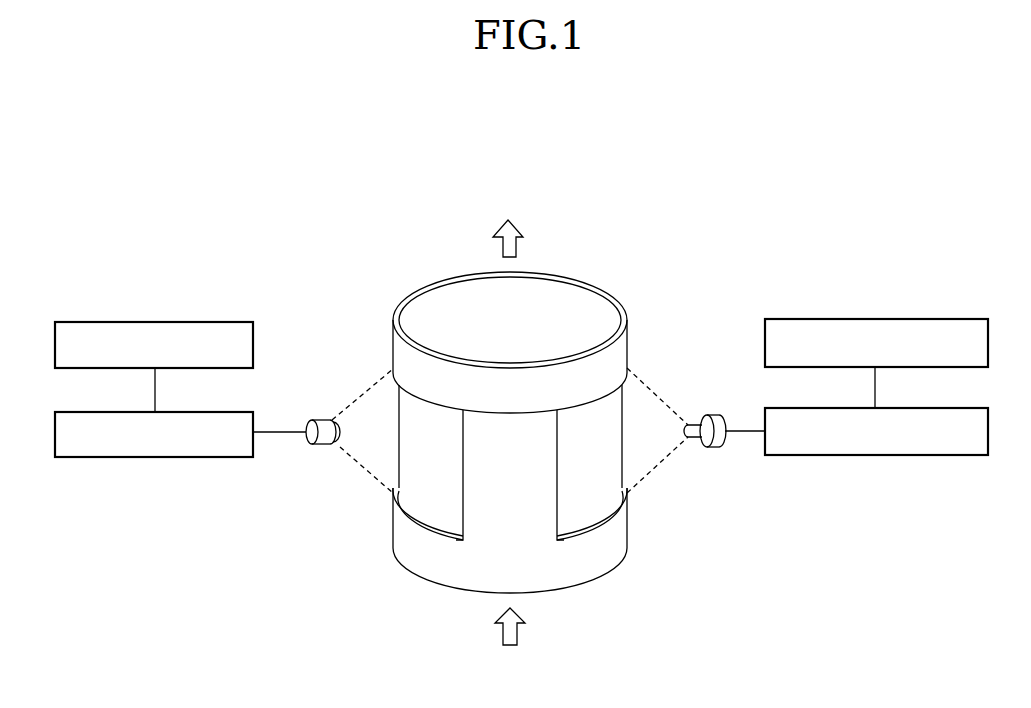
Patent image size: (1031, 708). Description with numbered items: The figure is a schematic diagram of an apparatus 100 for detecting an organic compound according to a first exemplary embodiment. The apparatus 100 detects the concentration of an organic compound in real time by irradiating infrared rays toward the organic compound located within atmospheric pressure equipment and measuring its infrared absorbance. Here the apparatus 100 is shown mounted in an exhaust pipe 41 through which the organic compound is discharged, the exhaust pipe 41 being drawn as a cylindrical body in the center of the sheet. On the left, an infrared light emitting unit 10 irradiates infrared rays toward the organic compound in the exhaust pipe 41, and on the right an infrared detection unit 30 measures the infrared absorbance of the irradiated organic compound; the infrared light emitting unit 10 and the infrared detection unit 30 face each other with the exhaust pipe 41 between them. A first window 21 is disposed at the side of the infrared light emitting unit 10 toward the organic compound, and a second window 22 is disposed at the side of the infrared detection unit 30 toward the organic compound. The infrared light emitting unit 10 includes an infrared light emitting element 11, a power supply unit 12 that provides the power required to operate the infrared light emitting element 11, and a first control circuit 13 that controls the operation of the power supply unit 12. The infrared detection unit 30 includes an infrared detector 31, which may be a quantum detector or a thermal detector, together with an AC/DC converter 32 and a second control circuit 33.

The apparatus for detecting an organic compound 100 is at (343, 240).
The infrared light emitting unit 10 is at (197, 413).
The infrared light emitting element 11 is at (318, 420).
The power supply unit 12 is at (155, 457).
The first control circuit 13 is at (155, 320).
The first window 21 is at (430, 505).
The second window 22 is at (605, 425).
The infrared detection unit 30 is at (836, 412).
The infrared detector 31 is at (713, 415).
The AC/DC converter 32 is at (875, 455).
The second control circuit 33 is at (875, 319).
The exhaust pipe 41 is at (580, 563).